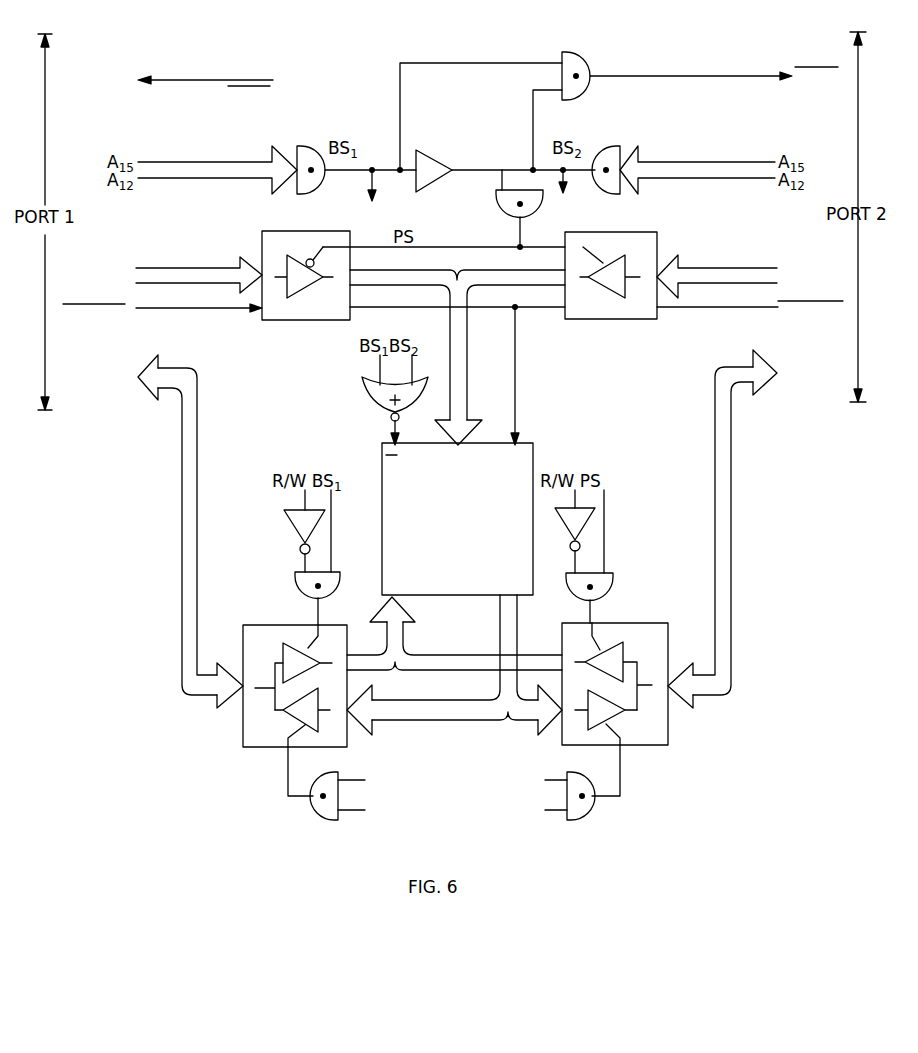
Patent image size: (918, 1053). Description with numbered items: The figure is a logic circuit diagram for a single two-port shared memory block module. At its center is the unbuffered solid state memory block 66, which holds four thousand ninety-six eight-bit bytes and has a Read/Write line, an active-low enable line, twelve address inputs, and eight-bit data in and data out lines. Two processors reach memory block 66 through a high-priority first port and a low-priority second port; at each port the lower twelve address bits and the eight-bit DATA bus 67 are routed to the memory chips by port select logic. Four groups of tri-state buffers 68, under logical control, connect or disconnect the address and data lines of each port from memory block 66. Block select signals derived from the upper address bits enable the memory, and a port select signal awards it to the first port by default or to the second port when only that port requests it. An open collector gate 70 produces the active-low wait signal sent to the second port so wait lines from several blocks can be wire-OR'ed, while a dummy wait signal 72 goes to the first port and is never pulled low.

The memory block 66 is at (533, 462).
The DATA bus 67 is at (182, 518).
The tri-state buffers 68 is at (270, 229).
The open collector gate 70 is at (580, 56).
The dummy WAIT signal 72 is at (268, 80).